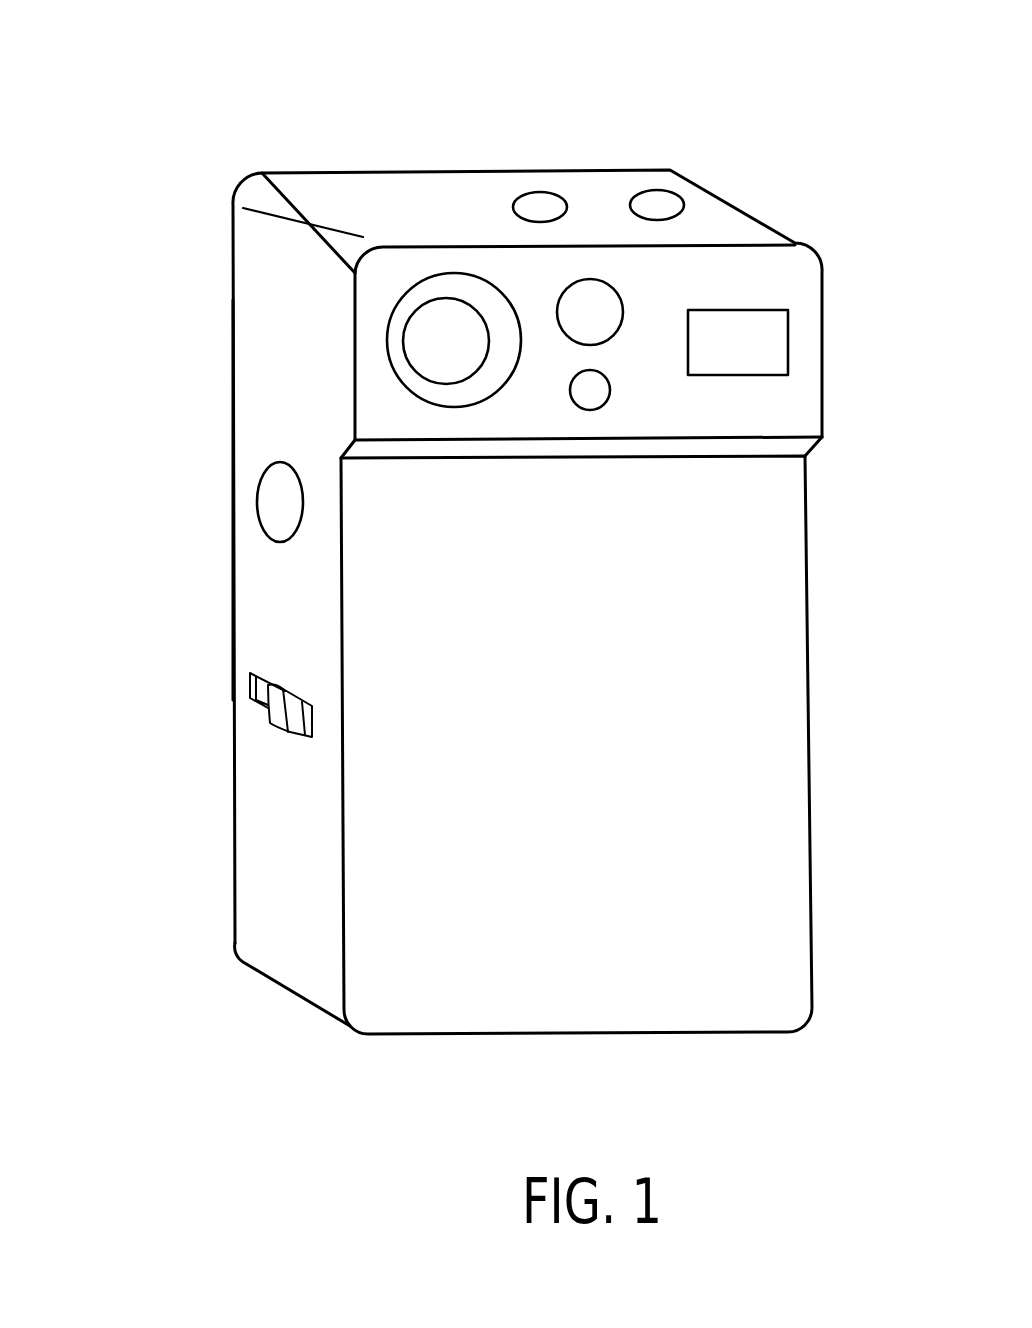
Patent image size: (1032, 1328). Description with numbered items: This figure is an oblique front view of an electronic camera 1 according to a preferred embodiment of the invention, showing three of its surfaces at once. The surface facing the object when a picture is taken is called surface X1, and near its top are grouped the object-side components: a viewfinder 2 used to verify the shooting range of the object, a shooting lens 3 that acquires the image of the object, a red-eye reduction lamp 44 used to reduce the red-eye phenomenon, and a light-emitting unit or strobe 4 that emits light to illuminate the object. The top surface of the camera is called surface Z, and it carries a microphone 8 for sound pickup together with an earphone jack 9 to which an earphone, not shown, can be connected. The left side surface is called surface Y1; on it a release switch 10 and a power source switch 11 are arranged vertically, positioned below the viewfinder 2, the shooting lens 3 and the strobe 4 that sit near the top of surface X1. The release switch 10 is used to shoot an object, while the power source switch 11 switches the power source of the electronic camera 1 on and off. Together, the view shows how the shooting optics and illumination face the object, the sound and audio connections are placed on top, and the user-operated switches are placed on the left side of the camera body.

The electronic camera 1 is at (580, 1033).
The viewfinder 2 is at (607, 278).
The shooting lens 3 is at (388, 340).
The strobe 4 is at (772, 343).
The microphone 8 is at (541, 197).
The earphone jack 9 is at (660, 197).
The release switch 10 is at (273, 512).
The power source switch 11 is at (263, 724).
The red-eye reduction lamp 44 is at (608, 395).
The top surface Z is at (372, 187).
The left side surface Y1 is at (243, 443).
The surface facing the object X1 is at (403, 1013).